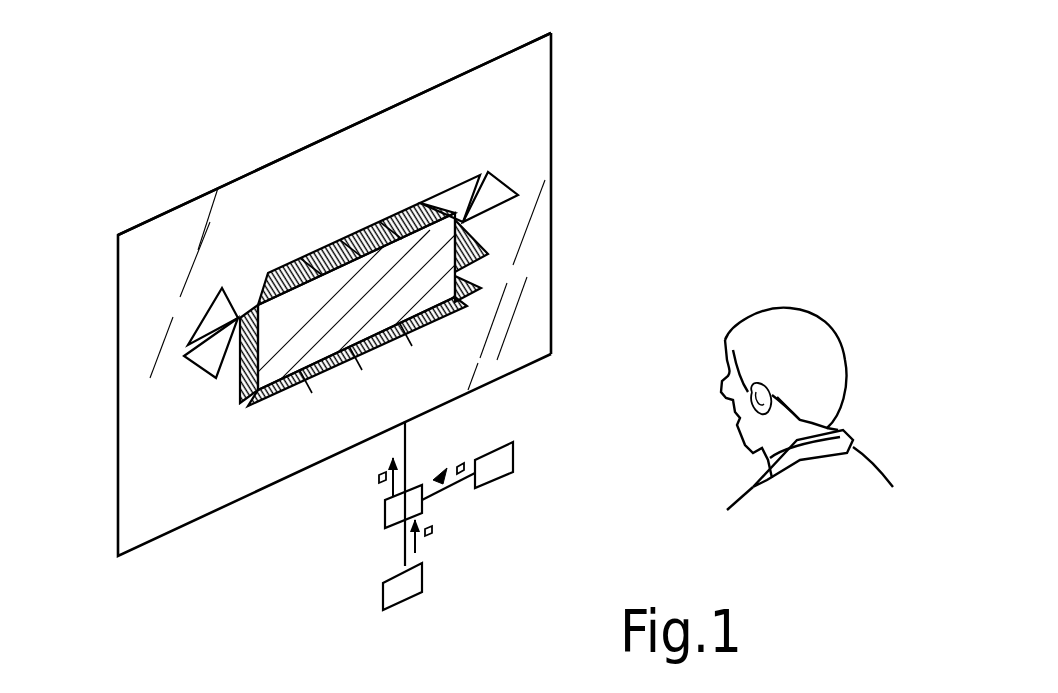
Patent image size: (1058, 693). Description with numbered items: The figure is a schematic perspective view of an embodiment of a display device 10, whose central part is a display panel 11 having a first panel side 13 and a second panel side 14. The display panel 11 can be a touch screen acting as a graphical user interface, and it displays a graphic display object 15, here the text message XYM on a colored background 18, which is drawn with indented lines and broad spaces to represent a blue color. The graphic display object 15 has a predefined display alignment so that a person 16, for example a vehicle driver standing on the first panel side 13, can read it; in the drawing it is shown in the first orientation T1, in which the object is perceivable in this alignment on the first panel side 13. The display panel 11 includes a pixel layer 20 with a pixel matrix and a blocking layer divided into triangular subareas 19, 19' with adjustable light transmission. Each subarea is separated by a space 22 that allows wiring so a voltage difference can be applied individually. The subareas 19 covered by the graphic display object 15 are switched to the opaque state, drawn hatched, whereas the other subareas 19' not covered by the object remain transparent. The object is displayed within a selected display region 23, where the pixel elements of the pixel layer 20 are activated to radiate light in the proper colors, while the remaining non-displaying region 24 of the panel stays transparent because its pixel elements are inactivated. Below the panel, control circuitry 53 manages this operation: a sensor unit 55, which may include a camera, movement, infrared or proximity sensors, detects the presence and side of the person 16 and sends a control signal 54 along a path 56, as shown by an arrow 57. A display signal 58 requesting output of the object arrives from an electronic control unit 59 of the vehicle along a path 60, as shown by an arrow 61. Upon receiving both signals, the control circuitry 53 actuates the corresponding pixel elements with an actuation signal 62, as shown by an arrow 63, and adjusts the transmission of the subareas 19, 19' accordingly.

The display device 10 is at (580, 117).
The display panel 11 is at (540, 80).
The first panel side 13 is at (532, 243).
The second panel side 14 is at (220, 250).
The graphic display object 15 is at (285, 392).
The person 16 is at (818, 328).
The colored background 18 is at (267, 275).
The subareas 19 is at (355, 188).
The other subareas 19' is at (347, 246).
The pixel layer 20 is at (543, 302).
The space 22 is at (403, 210).
The display region 23 is at (405, 340).
The non-displaying region 24 is at (197, 484).
The first orientation T1 is at (432, 270).
The control circuitry 53 is at (385, 530).
The control signal 54 is at (462, 462).
The sensor unit 55 is at (505, 478).
The path 56 is at (440, 492).
The arrow 57 is at (440, 475).
The display signal 58 is at (435, 530).
The electronic control unit 59 is at (422, 590).
The path 60 is at (395, 578).
The arrow 61 is at (417, 545).
The actuation signal 62 is at (378, 478).
The arrow 63 is at (390, 490).